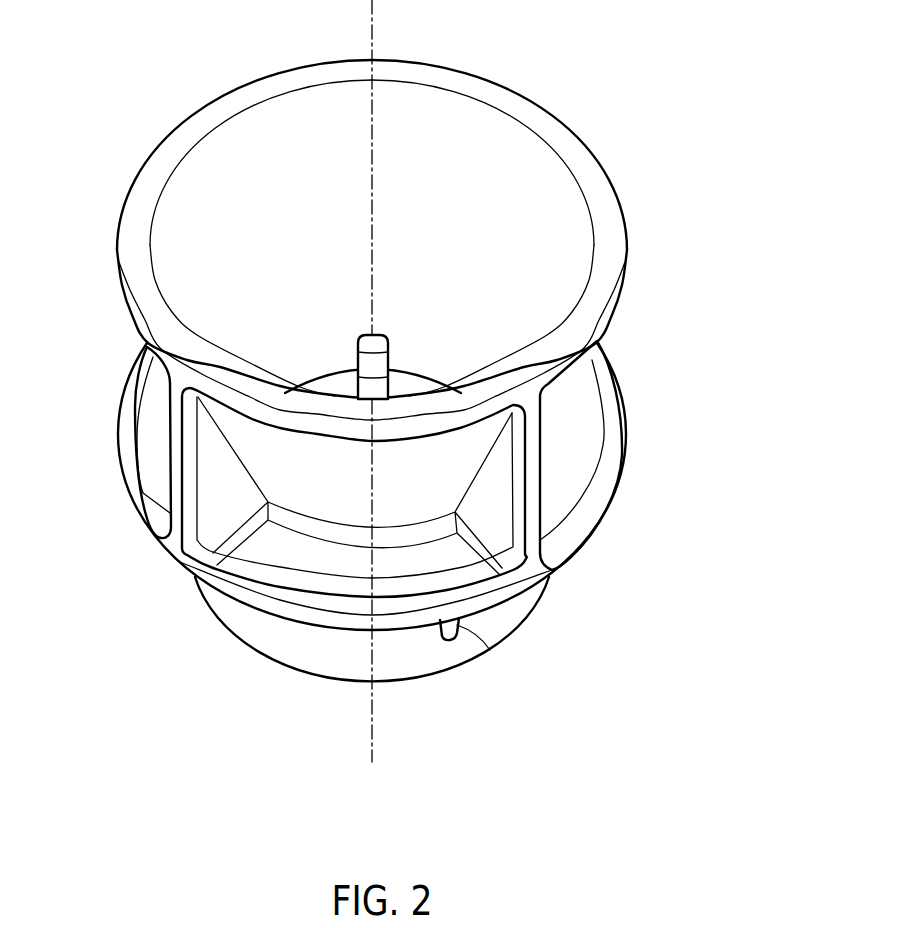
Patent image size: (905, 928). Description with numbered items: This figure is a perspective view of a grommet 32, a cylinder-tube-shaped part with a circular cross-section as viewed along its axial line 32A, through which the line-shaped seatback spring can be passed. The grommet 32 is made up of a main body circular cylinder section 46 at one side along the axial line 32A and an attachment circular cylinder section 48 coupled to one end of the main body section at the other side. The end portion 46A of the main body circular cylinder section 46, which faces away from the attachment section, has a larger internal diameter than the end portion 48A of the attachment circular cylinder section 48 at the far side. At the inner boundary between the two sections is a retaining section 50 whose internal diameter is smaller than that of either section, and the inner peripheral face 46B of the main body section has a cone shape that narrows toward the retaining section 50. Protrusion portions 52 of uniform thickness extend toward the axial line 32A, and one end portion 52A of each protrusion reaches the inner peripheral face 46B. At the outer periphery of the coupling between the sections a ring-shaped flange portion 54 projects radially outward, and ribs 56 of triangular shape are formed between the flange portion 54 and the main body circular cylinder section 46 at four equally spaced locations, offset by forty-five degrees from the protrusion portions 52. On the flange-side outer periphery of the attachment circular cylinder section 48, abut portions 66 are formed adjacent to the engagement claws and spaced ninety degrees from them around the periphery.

The grommet 32 is at (375, 372).
The axial line 32A is at (378, 13).
The main body circular cylinder section 46 is at (415, 212).
The end portion of the main body circular cylinder section 46A is at (233, 107).
The inner peripheral face of the main body circular cylinder section 46B is at (318, 115).
The attachment circular cylinder section 48 is at (419, 650).
The end portion of the attachment circular cylinder section 48A is at (415, 678).
The retaining section 50 is at (373, 337).
The protrusion portion 52 is at (329, 337).
The one end portion of the protrusion portion 52A is at (357, 337).
The flange portion 54 is at (354, 485).
The rib 56 is at (176, 487).
The abut portion 66 is at (460, 624).